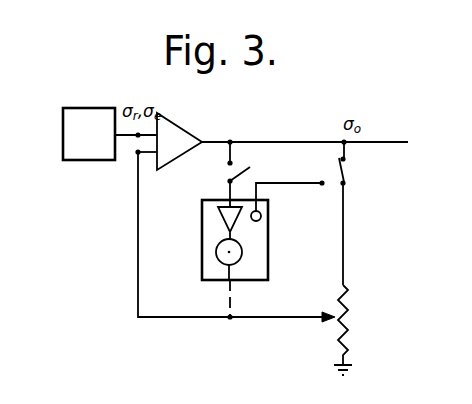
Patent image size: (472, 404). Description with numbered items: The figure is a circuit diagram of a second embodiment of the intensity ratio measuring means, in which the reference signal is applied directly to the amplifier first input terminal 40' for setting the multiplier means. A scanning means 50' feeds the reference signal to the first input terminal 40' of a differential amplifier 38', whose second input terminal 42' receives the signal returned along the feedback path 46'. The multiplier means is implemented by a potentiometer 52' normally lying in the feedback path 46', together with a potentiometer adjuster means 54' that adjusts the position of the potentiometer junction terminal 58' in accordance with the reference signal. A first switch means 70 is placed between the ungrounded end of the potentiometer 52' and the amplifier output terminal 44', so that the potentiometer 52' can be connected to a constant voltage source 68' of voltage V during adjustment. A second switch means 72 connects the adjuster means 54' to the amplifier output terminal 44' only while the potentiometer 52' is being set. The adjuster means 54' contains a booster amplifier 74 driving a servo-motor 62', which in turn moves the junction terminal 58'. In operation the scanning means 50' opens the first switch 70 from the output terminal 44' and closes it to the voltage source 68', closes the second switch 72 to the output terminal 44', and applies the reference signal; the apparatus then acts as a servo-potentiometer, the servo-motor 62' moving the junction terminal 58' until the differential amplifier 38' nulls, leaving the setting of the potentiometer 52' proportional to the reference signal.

The differential amplifier 38' is at (282, 139).
The scanning means 50' is at (110, 134).
The amplifier first input terminal 40' is at (117, 160).
The amplifier second input terminal 42' is at (156, 175).
The amplifier output terminal 44' is at (258, 135).
The second switch means 72 is at (247, 172).
The first switch means 70 is at (347, 172).
The potentiometer adjuster means 54' is at (214, 240).
The booster amplifier 74 is at (220, 215).
The servo-motor 62' is at (266, 263).
The constant voltage source 68' is at (288, 209).
The feedback path 46' is at (211, 236).
The potentiometer junction terminal 58' is at (309, 335).
The potentiometer 52' is at (368, 326).